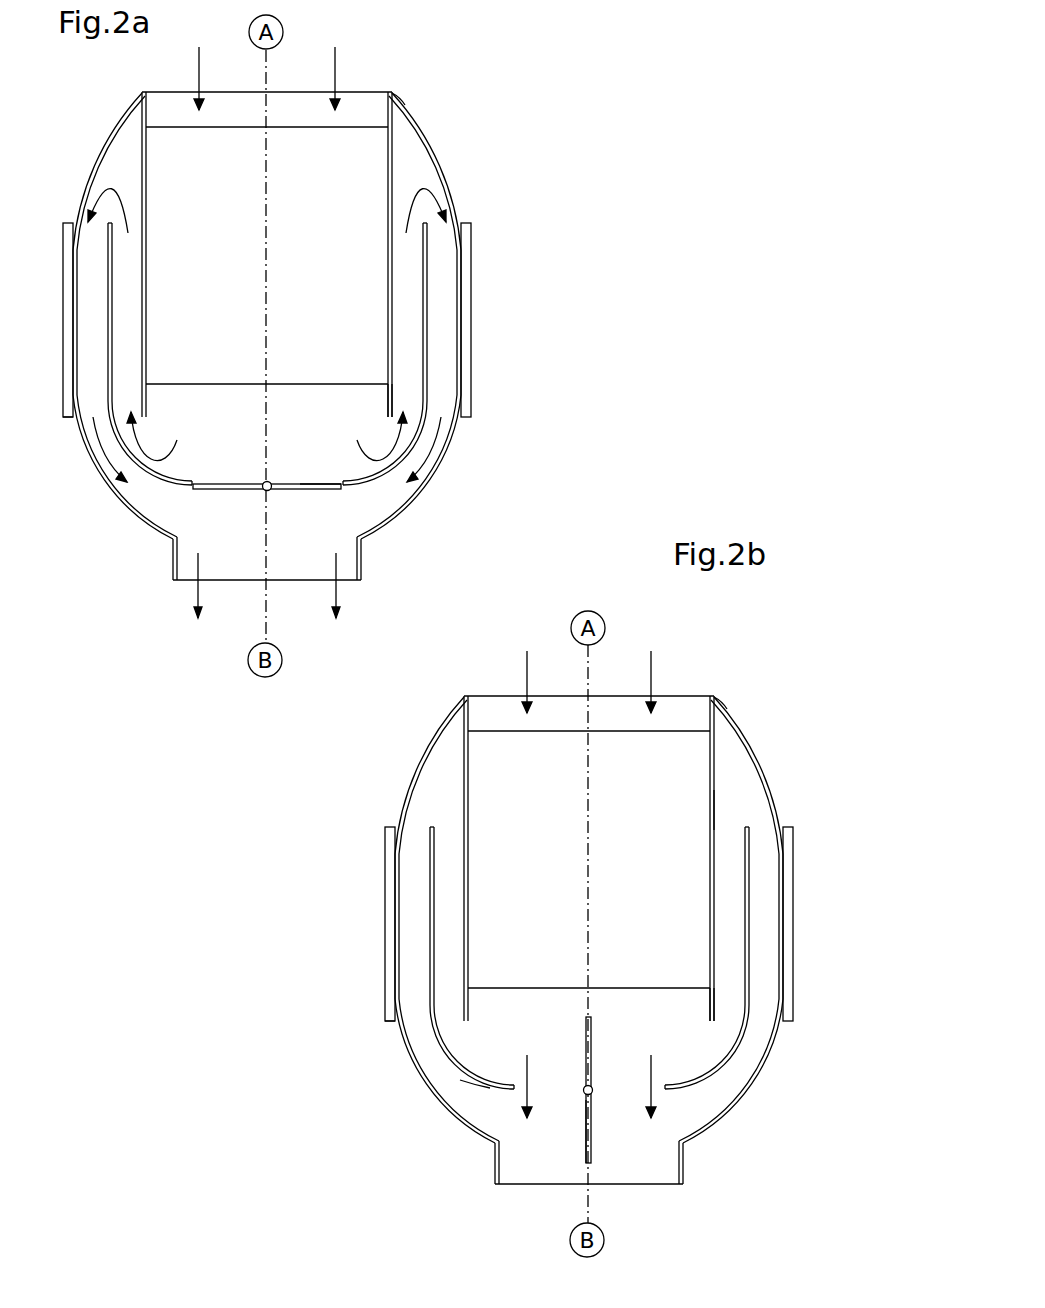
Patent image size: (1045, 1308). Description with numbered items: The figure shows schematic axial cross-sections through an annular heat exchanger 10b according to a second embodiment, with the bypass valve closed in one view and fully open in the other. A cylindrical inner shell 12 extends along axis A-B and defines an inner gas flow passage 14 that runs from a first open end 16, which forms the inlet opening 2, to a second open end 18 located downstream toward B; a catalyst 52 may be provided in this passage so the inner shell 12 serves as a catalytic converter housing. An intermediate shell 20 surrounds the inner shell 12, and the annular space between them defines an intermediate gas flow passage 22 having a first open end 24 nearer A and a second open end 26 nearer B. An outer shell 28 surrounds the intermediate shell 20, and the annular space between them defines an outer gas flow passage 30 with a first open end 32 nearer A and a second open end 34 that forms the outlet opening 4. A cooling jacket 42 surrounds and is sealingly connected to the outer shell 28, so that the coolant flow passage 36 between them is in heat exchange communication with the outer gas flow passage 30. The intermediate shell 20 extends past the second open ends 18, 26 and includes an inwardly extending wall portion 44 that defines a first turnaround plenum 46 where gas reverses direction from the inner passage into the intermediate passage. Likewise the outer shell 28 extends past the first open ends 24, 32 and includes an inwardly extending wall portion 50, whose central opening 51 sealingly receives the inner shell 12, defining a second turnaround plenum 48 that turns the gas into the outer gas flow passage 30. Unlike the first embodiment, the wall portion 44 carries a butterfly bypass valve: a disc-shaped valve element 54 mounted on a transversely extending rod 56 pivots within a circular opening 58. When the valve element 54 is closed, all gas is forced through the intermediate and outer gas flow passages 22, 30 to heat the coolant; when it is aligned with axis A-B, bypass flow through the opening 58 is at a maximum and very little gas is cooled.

In FIG. 2B, the inlet opening 2 is at (680, 693).
In FIG. 2B, the outlet opening 4 is at (665, 1185).
In FIG. 2A, the heat exchanger 10b is at (450, 98).
In FIG. 2B, the heat exchanger 10b is at (752, 700).
In FIG. 2A, the inner shell 12 is at (141, 172).
In FIG. 2B, the inner shell 12 is at (463, 790).
In FIG. 2A, the inner gas flow passage 14 is at (350, 410).
In FIG. 2B, the inner gas flow passage 14 is at (683, 1010).
In FIG. 2A, the first open end 16 is at (353, 90).
In FIG. 2B, the first open end 16 is at (500, 697).
In FIG. 2A, the second open end 18 is at (178, 445).
In FIG. 2B, the second open end 18 is at (493, 1040).
In FIG. 2A, the intermediate shell 20 is at (427, 307).
In FIG. 2B, the intermediate shell 20 is at (749, 910).
In FIG. 2A, the intermediate gas flow passage 22 is at (412, 338).
In FIG. 2B, the intermediate gas flow passage 22 is at (735, 955).
In FIG. 2A, the first open end 24 is at (397, 222).
In FIG. 2B, the first open end 24 is at (728, 840).
In FIG. 2A, the second open end 26 is at (408, 418).
In FIG. 2B, the second open end 26 is at (725, 1018).
In FIG. 2A, the outer shell 28 is at (80, 432).
In FIG. 2B, the outer shell 28 is at (400, 1033).
In FIG. 2A, the outer gas flow passage 30 is at (85, 360).
In FIG. 2B, the outer gas flow passage 30 is at (400, 915).
In FIG. 2A, the first open end 32 is at (88, 236).
In FIG. 2B, the first open end 32 is at (413, 836).
In FIG. 2A, the second open end 34 is at (68, 418).
In FIG. 2B, the second open end 34 is at (412, 1062).
In FIG. 2A, the coolant flow passage 36 is at (467, 255).
In FIG. 2B, the coolant flow passage 36 is at (795, 860).
In FIG. 2A, the cooling jacket 42 is at (63, 327).
In FIG. 2B, the cooling jacket 42 is at (385, 945).
In FIG. 2A, the inwardly extending wall portion 44 is at (165, 455).
In FIG. 2B, the inwardly extending wall portion 44 is at (668, 1095).
In FIG. 2A, the first turnaround plenum 46 is at (378, 458).
In FIG. 2B, the first turnaround plenum 46 is at (470, 1042).
In FIG. 2A, the second turnaround plenum 48 is at (95, 192).
In FIG. 2B, the second turnaround plenum 48 is at (727, 800).
In FIG. 2A, the inwardly extending wall portion 50 is at (123, 115).
In FIG. 2B, the inwardly extending wall portion 50 is at (447, 722).
In FIG. 2A, the central opening 51 is at (394, 98).
In FIG. 2B, the central opening 51 is at (715, 700).
In FIG. 2A, the catalyst 52 is at (252, 273).
In FIG. 2B, the catalyst 52 is at (574, 875).
In FIG. 2A, the valve element 54 is at (300, 490).
In FIG. 2B, the valve element 54 is at (583, 1127).
In FIG. 2A, the rod 56 is at (264, 491).
In FIG. 2B, the rod 56 is at (592, 1091).
In FIG. 2A, the circular opening 58 is at (252, 483).
In FIG. 2B, the circular opening 58 is at (553, 1093).